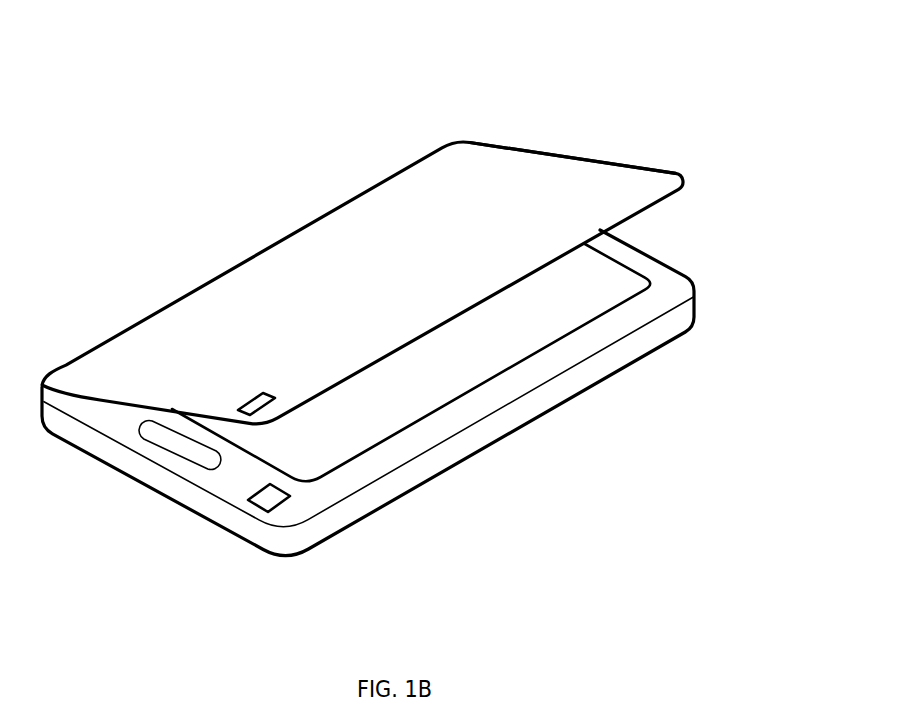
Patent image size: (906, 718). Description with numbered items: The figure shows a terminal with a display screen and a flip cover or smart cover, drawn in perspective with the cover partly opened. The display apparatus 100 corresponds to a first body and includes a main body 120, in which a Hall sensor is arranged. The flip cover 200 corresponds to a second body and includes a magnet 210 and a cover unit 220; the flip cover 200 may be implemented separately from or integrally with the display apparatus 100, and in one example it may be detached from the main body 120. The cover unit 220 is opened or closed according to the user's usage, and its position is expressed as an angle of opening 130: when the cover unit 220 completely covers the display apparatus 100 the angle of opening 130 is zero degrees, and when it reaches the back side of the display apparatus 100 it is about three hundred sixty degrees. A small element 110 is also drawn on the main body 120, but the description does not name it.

The display apparatus 100 is at (350, 49).
The first magnetic member 110 is at (282, 505).
The main body 120 is at (681, 388).
The angle of opening 130 is at (88, 400).
The flip cover 200 is at (681, 230).
The magnet 210 is at (238, 408).
The cover unit 220 is at (573, 158).